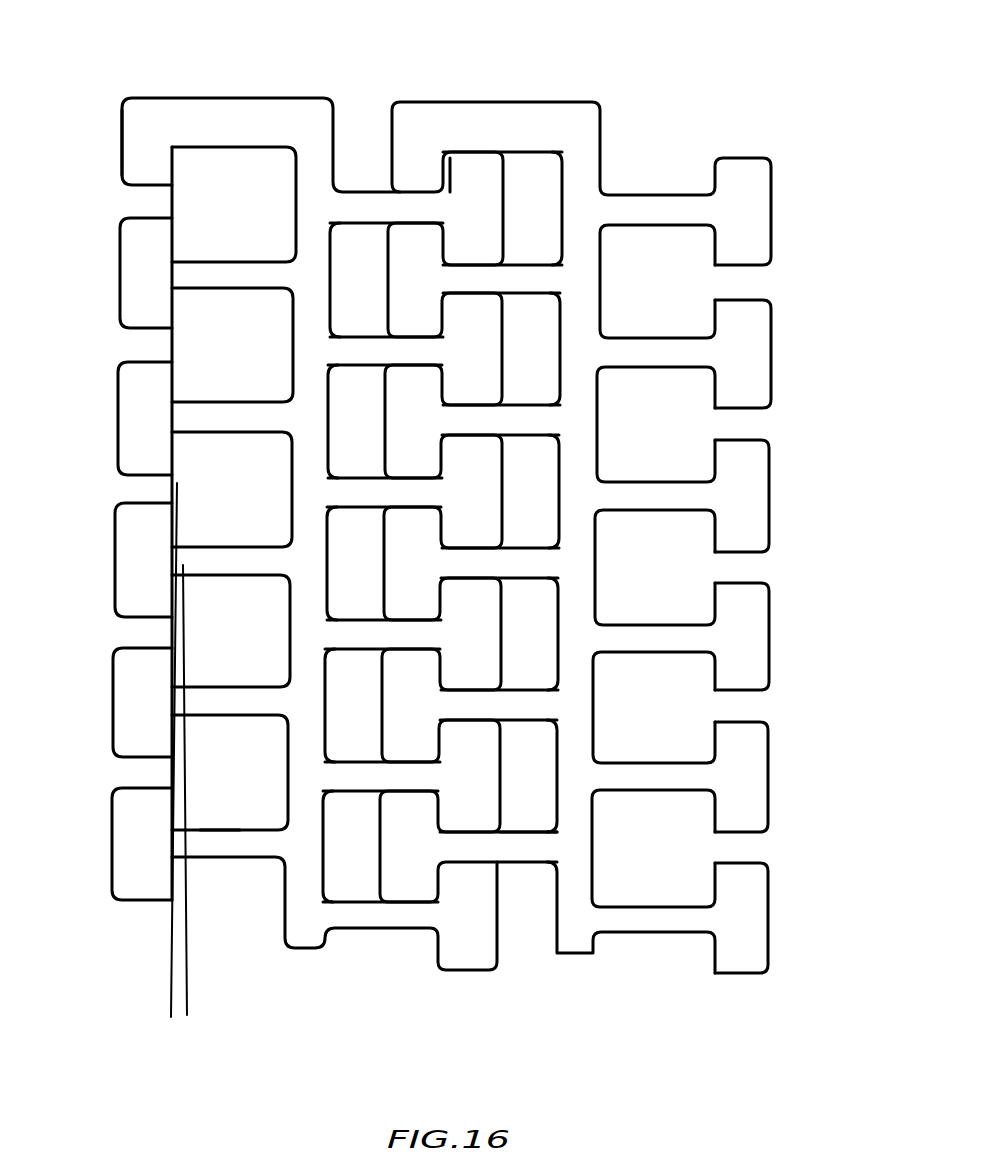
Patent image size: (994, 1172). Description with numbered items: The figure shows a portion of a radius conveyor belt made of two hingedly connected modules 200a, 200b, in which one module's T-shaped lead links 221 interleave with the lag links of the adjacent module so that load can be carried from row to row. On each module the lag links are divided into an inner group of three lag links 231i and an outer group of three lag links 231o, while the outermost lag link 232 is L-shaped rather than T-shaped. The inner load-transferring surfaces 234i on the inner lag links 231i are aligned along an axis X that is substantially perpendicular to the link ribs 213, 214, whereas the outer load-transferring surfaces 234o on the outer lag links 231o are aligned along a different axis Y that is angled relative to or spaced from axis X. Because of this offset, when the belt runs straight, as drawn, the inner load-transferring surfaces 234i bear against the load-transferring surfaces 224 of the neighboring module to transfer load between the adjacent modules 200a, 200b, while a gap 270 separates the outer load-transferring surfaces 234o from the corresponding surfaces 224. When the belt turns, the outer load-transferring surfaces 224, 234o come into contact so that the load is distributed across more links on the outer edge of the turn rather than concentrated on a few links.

The conveyor belt module 200a is at (608, 93).
The conveyor belt module 200b is at (233, 87).
The link rib 213 is at (660, 195).
The link rib 214 is at (203, 827).
The T-shaped lead link 221 is at (770, 226).
The load-transferring surface 224 is at (446, 162).
The outer lag link 231o is at (118, 270).
The inner lag link 231i is at (115, 578).
The outermost lag link 232 is at (130, 160).
The outer load-transferring surface 234o is at (438, 160).
The inner load-transferring surface 234i is at (175, 518).
The gap 270 is at (447, 180).
The axis X is at (171, 767).
The axis Y is at (192, 808).